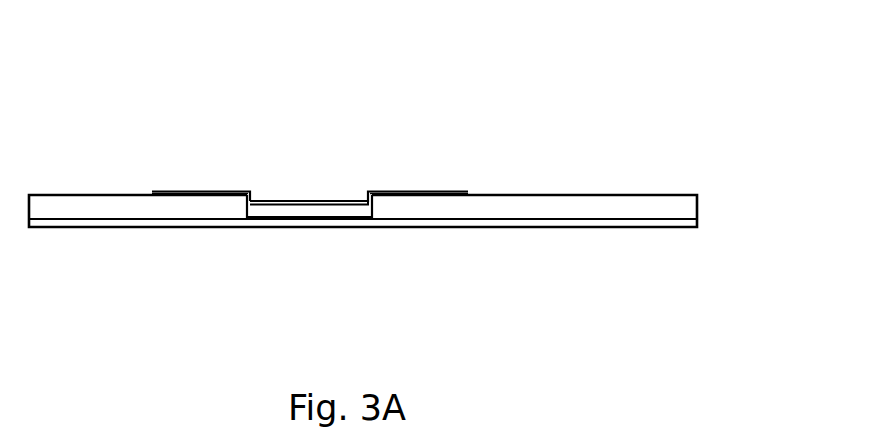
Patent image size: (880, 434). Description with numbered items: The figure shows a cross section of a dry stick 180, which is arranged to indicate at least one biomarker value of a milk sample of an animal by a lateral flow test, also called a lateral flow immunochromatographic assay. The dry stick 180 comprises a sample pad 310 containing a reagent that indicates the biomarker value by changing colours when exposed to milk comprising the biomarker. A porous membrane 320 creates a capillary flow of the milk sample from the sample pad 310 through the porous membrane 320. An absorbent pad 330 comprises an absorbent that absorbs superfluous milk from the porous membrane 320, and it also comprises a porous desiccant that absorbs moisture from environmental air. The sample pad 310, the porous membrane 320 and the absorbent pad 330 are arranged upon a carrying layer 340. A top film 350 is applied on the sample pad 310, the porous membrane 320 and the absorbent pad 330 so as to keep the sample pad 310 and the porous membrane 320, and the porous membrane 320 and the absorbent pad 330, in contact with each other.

The dry stick 180 is at (692, 92).
The sample pad 310 is at (529, 207).
The porous membrane 320 is at (288, 210).
The absorbent pad 330 is at (143, 208).
The carrying layer 340 is at (354, 221).
The top film 350 is at (307, 202).